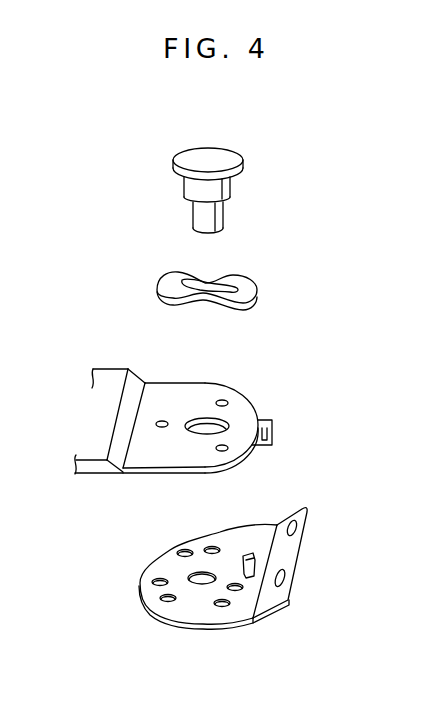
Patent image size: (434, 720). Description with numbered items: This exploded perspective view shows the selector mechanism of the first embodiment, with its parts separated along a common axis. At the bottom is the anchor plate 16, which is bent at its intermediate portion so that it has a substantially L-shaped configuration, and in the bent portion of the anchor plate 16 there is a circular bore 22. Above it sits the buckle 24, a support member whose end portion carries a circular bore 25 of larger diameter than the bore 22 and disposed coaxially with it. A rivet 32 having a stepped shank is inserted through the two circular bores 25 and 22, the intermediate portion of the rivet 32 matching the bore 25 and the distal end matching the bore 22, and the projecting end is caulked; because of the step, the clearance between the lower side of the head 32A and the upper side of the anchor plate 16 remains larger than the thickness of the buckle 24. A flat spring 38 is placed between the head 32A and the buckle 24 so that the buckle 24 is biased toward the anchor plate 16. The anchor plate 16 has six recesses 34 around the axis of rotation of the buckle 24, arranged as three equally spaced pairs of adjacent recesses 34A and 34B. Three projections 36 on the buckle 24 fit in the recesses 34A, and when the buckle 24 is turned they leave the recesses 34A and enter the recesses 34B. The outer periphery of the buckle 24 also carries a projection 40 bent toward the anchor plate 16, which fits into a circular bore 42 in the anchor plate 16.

The anchor plate 16 is at (208, 565).
The circular bore 22 is at (200, 580).
The buckle 24 is at (192, 429).
The circular bore 25 is at (208, 434).
The rivet 32 is at (181, 163).
The head 32A is at (203, 155).
The recesses 34 is at (208, 556).
The recesses 34A is at (212, 549).
The recesses 34B is at (185, 552).
The projections 36 is at (216, 411).
The flat spring 38 is at (257, 290).
The projection 40 is at (262, 419).
The circular bore 42 is at (255, 557).